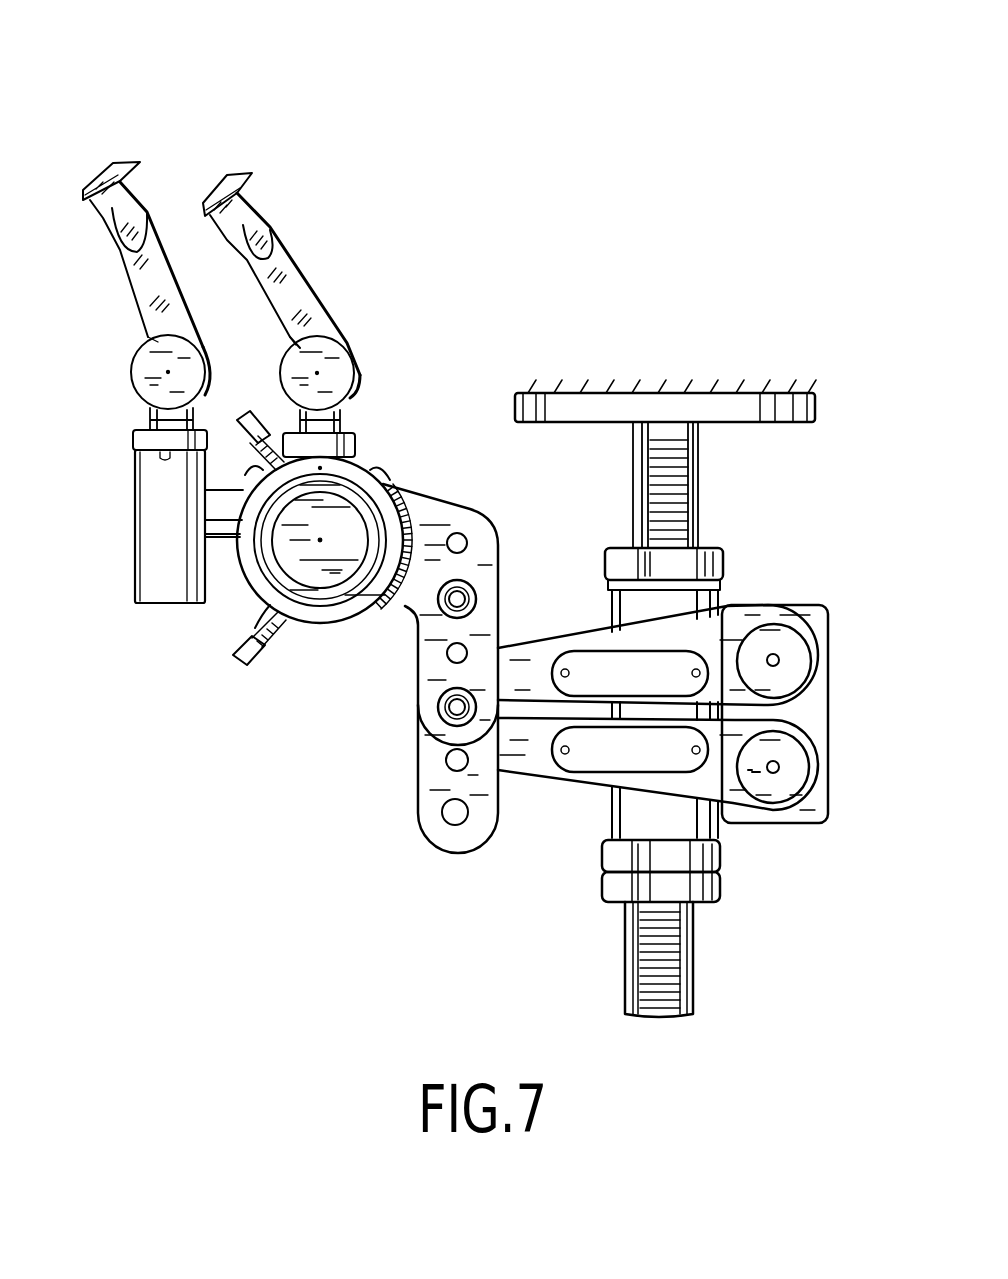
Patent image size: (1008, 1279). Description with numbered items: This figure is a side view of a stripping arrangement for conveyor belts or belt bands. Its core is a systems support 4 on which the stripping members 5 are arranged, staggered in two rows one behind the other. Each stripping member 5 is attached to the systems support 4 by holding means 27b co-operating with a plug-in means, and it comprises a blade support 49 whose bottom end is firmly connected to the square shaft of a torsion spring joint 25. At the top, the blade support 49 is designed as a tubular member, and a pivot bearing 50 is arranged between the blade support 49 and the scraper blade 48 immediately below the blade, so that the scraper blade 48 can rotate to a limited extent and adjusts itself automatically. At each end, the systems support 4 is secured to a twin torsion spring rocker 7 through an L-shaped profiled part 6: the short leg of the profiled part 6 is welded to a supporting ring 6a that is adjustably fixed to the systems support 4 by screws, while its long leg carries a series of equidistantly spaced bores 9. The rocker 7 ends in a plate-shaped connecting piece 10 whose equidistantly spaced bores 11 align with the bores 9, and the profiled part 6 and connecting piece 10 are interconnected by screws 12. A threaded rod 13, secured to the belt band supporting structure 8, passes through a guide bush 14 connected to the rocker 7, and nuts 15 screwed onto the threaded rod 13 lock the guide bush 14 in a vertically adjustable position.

The scraper blade 48 is at (122, 163).
The pivot bearing 50 is at (113, 217).
The blade support 49 is at (128, 298).
The stripping member 5 is at (130, 343).
The torsion spring joint 25 is at (127, 387).
The holding means 27b is at (130, 503).
The systems support 4 is at (272, 568).
The L-shaped profiled part 6 is at (433, 523).
The supporting ring 6a is at (317, 615).
The bores 9 is at (467, 537).
The screws 12 is at (437, 710).
The bores 11 is at (440, 813).
The plate-shaped connecting piece 10 is at (457, 840).
The twin torsion spring rocker 7 is at (836, 708).
The belt band supporting structure 8 is at (693, 393).
The nuts 15 is at (723, 567).
The guide bush 14 is at (607, 823).
The threaded rod 13 is at (697, 962).